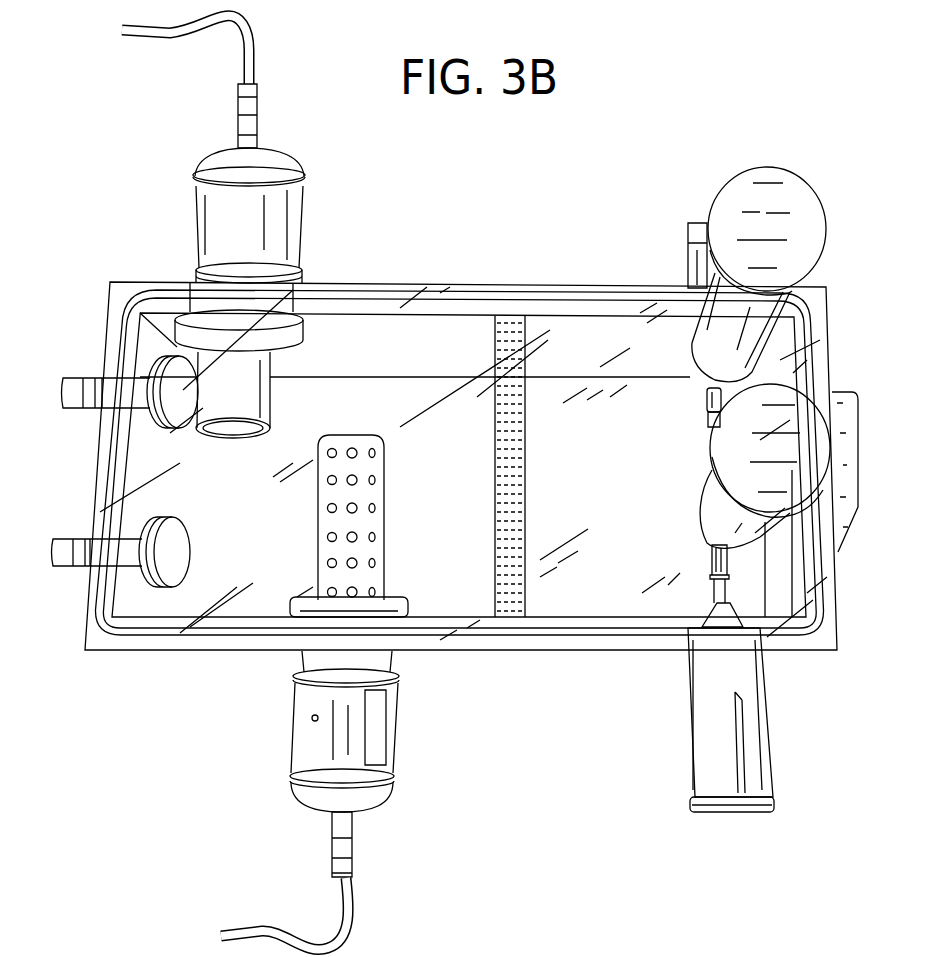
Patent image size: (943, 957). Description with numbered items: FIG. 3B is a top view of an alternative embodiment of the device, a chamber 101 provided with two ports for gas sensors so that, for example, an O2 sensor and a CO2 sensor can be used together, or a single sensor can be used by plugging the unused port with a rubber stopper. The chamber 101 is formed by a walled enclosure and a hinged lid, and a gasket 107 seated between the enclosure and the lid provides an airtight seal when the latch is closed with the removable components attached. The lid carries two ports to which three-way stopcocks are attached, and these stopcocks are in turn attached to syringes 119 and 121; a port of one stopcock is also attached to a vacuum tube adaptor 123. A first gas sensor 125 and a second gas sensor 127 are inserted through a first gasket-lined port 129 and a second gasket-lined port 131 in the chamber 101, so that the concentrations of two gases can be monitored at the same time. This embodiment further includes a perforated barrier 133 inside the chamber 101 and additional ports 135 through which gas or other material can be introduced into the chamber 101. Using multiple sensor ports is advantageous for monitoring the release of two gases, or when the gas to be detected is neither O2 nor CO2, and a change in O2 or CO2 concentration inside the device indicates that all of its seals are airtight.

The chamber 101 is at (436, 283).
The gasket 107 is at (574, 298).
The syringe 119 is at (734, 468).
The syringe 121 is at (723, 210).
The vacuum tube adaptor 123 is at (707, 753).
The first gas sensor 125 is at (343, 750).
The second gas sensor 127 is at (278, 217).
The first gasket-lined port 129 is at (383, 578).
The second gasket-lined port 131 is at (287, 348).
The perforated barrier 133 is at (525, 452).
The additional ports 135 is at (77, 383).